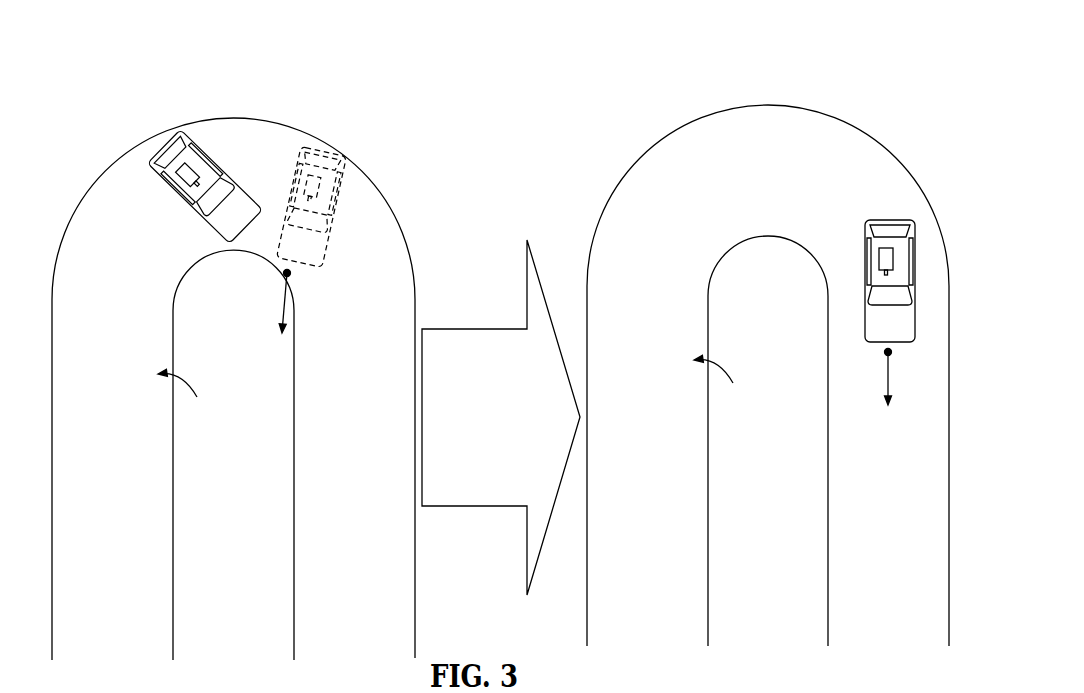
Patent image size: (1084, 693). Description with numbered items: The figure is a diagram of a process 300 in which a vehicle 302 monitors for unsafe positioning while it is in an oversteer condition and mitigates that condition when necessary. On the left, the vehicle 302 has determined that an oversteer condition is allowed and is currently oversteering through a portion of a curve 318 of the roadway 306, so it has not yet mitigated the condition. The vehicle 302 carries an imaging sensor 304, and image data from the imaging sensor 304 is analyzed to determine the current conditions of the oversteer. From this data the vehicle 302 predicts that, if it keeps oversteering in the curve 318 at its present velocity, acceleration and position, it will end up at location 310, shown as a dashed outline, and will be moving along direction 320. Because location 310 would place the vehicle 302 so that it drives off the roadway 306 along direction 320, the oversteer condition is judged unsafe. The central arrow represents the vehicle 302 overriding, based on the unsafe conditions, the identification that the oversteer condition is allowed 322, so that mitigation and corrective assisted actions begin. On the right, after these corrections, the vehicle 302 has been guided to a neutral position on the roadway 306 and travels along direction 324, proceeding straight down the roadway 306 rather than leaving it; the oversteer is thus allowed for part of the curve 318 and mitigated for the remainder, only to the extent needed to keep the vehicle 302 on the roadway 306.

The process 300 is at (502, 357).
The vehicle 302 is at (177, 140).
The imaging sensor 304 is at (190, 166).
The roadway 306 is at (450, 389).
The location 310 is at (345, 158).
The curve 318 is at (287, 150).
The direction 320 is at (282, 302).
The override of the identification that the oversteer condition is allowed 322 is at (460, 327).
The direction 324 is at (887, 377).